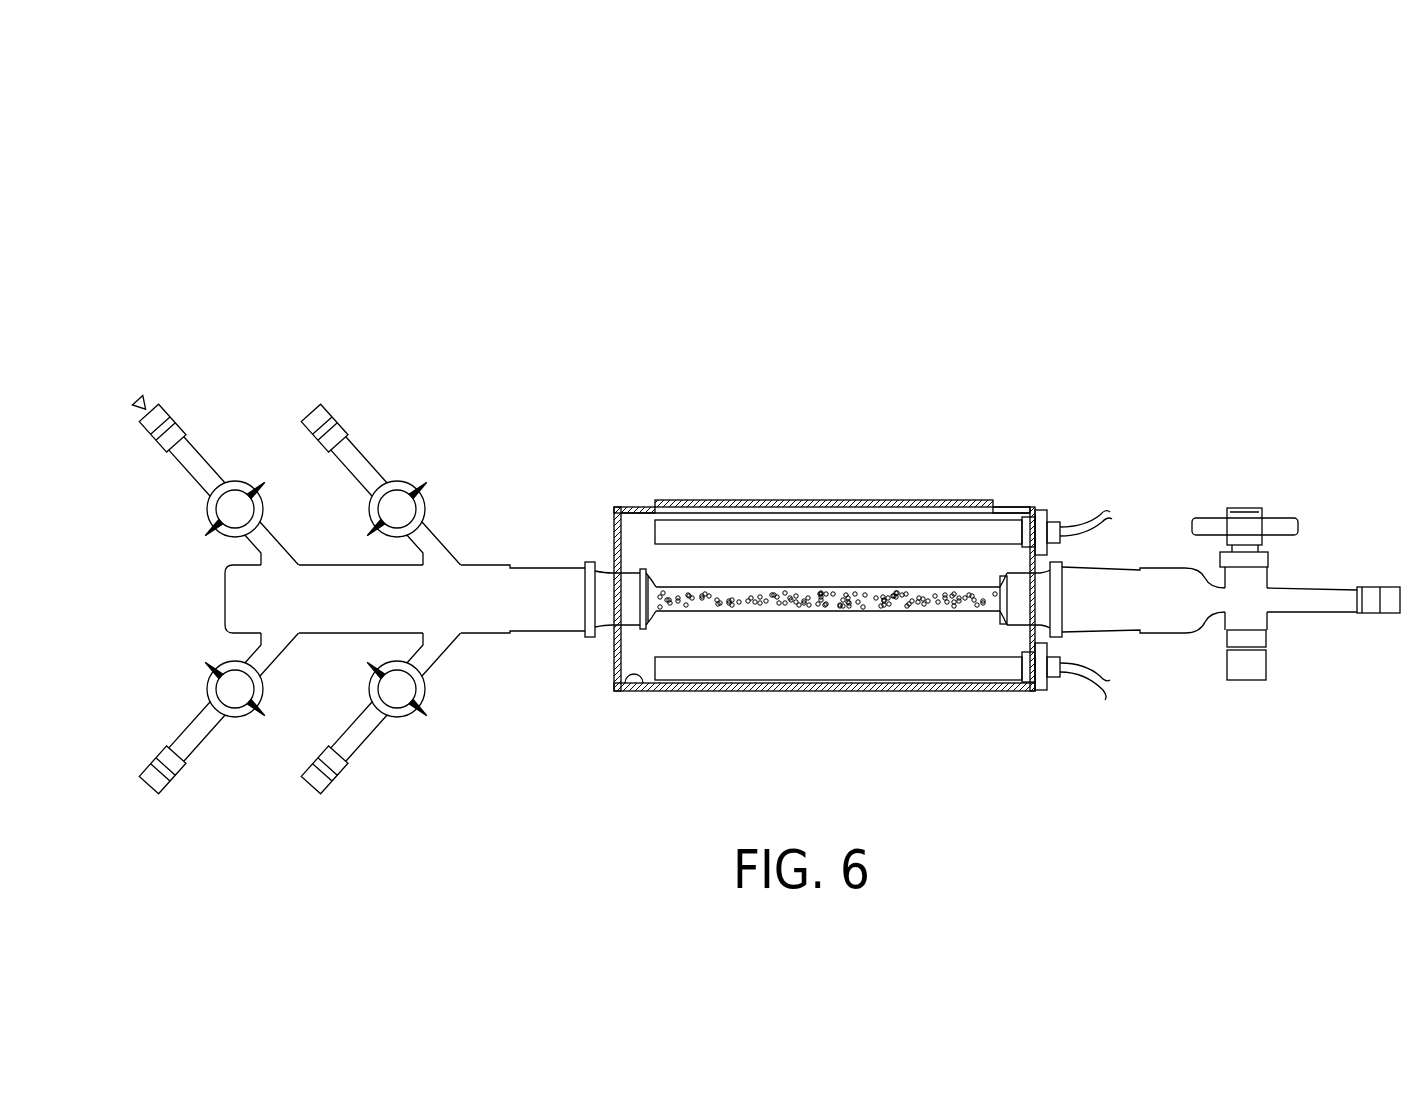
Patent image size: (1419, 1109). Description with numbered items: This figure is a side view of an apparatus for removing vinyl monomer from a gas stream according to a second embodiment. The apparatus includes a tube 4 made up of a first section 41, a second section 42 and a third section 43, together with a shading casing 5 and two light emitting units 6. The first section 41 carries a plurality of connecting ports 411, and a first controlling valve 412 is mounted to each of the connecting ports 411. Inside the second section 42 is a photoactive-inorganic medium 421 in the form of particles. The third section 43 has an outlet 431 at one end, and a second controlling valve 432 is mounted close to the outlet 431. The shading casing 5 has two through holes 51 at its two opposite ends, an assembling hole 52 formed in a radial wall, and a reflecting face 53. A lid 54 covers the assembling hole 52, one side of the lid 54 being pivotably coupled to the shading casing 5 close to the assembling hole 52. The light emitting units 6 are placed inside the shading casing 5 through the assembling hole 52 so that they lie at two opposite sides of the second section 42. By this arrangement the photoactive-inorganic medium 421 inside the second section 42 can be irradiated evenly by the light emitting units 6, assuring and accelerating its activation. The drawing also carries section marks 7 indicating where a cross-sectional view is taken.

The tube 4 is at (858, 192).
The first section 41 is at (536, 585).
The connecting ports 411 is at (186, 441).
The first controlling valve 412 is at (235, 500).
The second section 42 is at (742, 590).
The photoactive-inorganic medium 421 is at (752, 606).
The third section 43 is at (1167, 585).
The outlet 431 is at (1315, 598).
The second controlling valve 432 is at (1247, 515).
The shading casing 5 is at (606, 518).
The through holes 51 is at (604, 628).
The assembling hole 52 is at (689, 503).
The reflecting face 53 is at (621, 687).
The lid 54 is at (953, 503).
The light emitting units 6 is at (996, 530).
The section line 7 is at (826, 468).